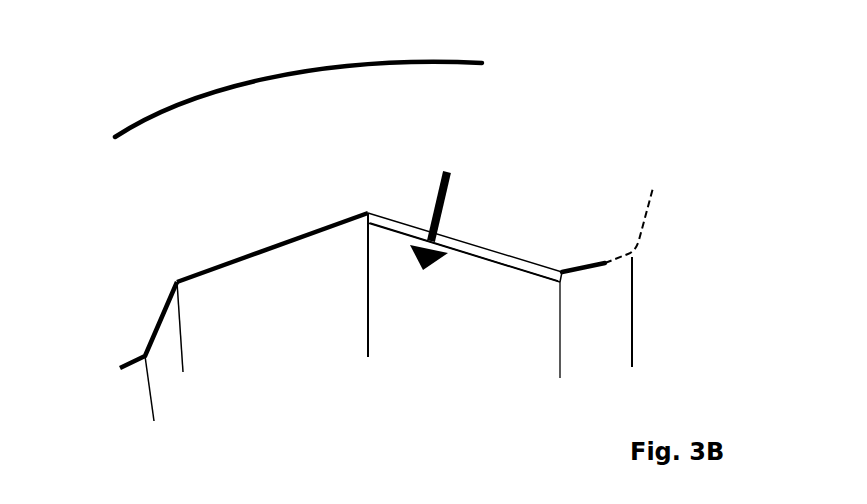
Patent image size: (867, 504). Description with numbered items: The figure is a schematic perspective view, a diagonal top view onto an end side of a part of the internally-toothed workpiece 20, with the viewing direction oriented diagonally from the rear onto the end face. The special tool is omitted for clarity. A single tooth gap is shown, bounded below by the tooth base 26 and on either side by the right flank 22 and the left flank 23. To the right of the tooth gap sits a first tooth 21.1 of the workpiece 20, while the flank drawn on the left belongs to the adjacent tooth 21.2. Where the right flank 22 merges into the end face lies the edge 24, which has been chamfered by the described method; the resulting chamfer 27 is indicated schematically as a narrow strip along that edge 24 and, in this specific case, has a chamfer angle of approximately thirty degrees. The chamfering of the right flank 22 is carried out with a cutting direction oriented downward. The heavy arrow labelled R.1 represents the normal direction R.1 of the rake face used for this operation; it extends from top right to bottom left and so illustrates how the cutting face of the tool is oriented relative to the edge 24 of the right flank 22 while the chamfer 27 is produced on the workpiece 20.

The internally-toothed workpiece 20 is at (203, 120).
The first tooth 21.1 is at (577, 233).
The second side wall portion 21.2 is at (148, 325).
The right flank 22 is at (405, 343).
The left flank 23 is at (178, 372).
The edge 24 is at (472, 266).
The tooth base 26 is at (278, 328).
The chamfer 27 is at (500, 255).
The normal direction of the rake face R.1 is at (441, 207).